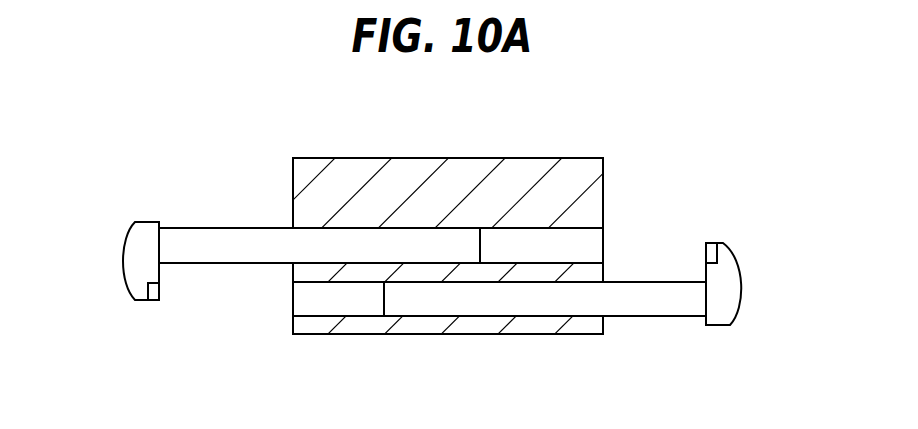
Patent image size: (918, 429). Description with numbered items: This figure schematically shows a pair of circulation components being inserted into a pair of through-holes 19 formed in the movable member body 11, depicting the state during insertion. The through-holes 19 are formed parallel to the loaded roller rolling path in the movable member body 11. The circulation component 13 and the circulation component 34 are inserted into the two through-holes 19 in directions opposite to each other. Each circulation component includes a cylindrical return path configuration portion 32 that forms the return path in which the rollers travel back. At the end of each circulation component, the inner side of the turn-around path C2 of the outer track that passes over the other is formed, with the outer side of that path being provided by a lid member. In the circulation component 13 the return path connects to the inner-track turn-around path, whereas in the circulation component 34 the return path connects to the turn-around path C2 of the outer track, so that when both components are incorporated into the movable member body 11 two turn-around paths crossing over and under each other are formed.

The movable member body 11 is at (418, 172).
The circulation component 13 is at (218, 217).
The through-hole 19 is at (583, 230).
The return path configuration portion 32 is at (226, 256).
The circulation component 34 is at (676, 339).
The turn-around path of outer track C2 is at (128, 235).